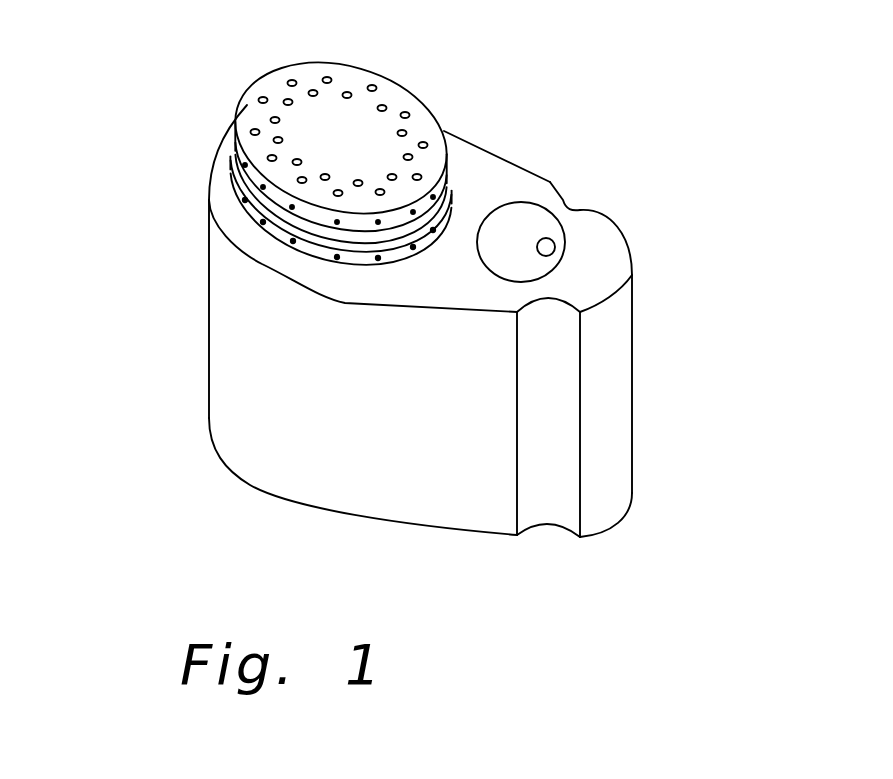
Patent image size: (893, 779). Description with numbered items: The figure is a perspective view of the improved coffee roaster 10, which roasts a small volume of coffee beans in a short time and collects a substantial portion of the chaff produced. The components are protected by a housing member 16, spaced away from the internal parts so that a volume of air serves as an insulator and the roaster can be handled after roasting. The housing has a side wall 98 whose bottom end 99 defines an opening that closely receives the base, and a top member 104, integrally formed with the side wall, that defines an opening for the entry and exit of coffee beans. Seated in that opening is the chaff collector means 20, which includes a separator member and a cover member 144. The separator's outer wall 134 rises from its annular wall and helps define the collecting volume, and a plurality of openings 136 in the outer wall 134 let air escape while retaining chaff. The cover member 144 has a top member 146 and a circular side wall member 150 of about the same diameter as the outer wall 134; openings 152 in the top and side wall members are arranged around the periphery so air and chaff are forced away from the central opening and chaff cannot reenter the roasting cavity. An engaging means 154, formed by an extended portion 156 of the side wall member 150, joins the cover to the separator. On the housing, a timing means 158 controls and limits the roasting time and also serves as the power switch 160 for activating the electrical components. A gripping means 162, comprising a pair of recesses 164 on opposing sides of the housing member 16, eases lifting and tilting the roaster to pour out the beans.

The improved coffee roaster 10 is at (687, 103).
The housing member 16 is at (345, 439).
The chaff collector means 20 is at (386, 71).
The side wall 98 is at (209, 332).
The bottom end 99 is at (237, 471).
The top member 104 is at (487, 187).
The outer wall 134 is at (277, 234).
The openings 136 is at (337, 258).
The cover member 144 is at (255, 92).
The top member 146 is at (277, 88).
The side wall member 150 is at (275, 201).
The openings 152 is at (277, 118).
The engaging means 154 is at (455, 178).
The extended portion 156 is at (388, 246).
The timing means 158 is at (536, 232).
The power switch 160 is at (557, 240).
The gripping means 162 is at (576, 556).
The recesses 164 is at (563, 198).